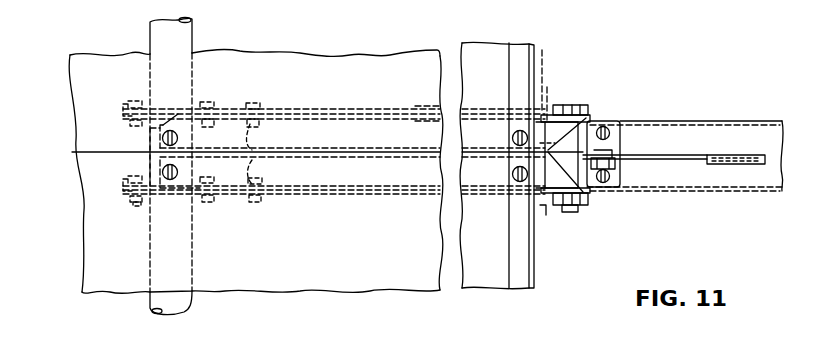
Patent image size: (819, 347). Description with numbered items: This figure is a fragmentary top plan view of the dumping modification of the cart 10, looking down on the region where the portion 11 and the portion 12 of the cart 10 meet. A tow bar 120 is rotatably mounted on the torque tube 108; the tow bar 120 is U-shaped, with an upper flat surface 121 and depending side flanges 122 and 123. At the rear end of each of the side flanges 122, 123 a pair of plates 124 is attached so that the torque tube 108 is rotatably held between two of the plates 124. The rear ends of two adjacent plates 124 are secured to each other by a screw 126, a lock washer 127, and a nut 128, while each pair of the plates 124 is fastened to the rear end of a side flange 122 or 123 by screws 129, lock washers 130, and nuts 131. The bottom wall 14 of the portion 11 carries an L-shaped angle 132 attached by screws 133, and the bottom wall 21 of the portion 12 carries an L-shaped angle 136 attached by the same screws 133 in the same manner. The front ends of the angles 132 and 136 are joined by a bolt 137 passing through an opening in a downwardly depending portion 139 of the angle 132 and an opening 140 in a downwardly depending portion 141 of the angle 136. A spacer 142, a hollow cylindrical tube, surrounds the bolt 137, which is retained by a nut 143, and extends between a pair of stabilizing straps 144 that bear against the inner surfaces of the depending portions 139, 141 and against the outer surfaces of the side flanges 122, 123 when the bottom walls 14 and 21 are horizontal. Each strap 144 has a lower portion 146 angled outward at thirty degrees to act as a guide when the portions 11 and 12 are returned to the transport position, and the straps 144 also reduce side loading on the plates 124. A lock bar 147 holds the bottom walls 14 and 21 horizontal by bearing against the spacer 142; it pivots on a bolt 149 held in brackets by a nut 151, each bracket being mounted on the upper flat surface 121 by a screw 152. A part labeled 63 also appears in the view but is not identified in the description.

The cart 10 is at (395, 312).
The portion 11 is at (338, 294).
The portion 12 is at (500, 38).
The bottom wall 14 is at (386, 271).
The bottom wall 21 is at (494, 86).
The post flange 63 is at (535, 262).
The torque tube 108 is at (194, 308).
The tow bar 120 is at (718, 191).
The upper flat surface 121 is at (767, 150).
The side flange 122 is at (312, 186).
The side flange 123 is at (296, 123).
The plate 124 is at (150, 141).
The screw 126 is at (141, 206).
The lock washer 127 is at (126, 186).
The nut 128 is at (150, 172).
The screw 129 is at (207, 204).
The lock washer 130 is at (255, 186).
The nut 131 is at (253, 151).
The L-shaped angle 132 is at (403, 153).
The screw 133 is at (178, 173).
The L-shaped angle 136 is at (425, 111).
The bolt 137 is at (572, 108).
The downwardly depending portion 139 is at (543, 206).
The opening 140 is at (602, 119).
The downwardly depending portion 141 is at (546, 110).
The spacer 142 is at (542, 74).
The nut 143 is at (579, 213).
The stabilizing strap 144 is at (585, 106).
The lower portion 146 is at (540, 205).
The lock bar 147 is at (700, 154).
The bolt 149 is at (700, 155).
The nut 151 is at (620, 174).
The screw 152 is at (611, 133).